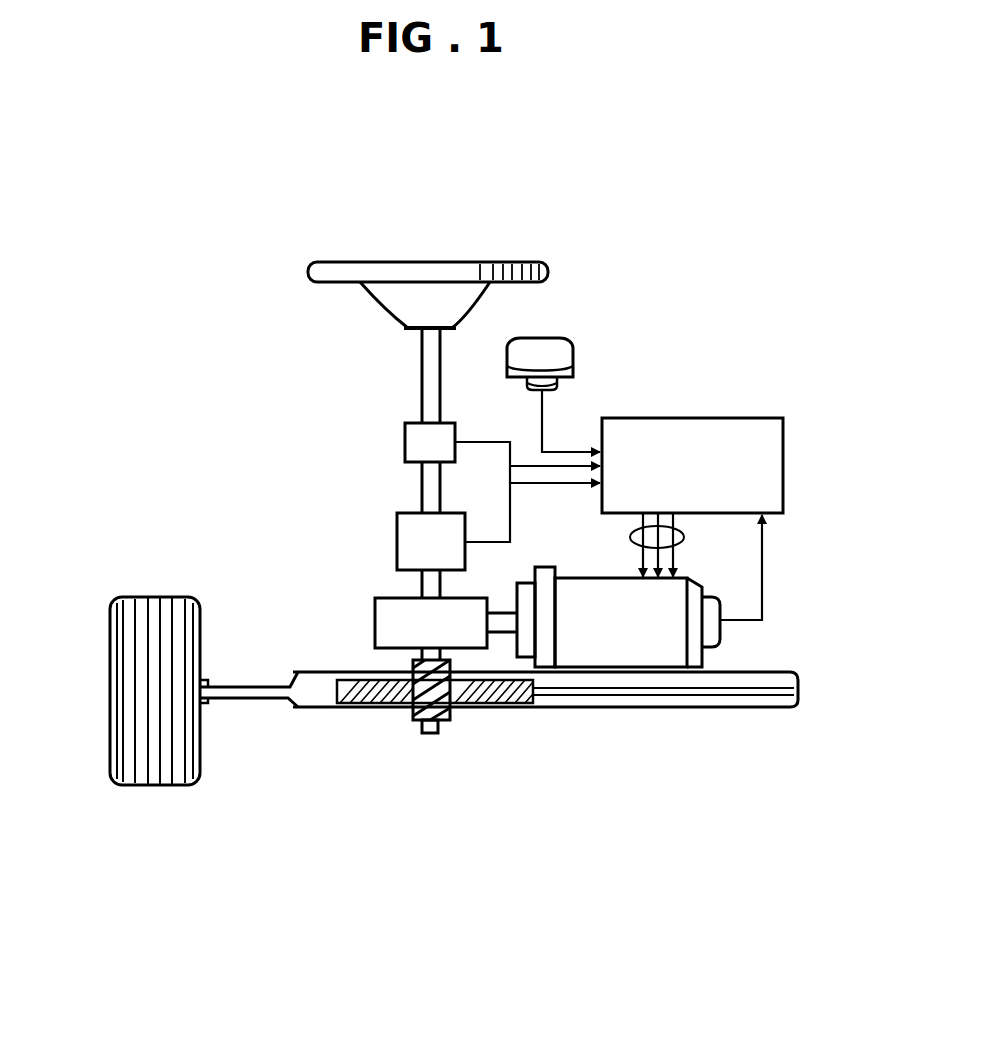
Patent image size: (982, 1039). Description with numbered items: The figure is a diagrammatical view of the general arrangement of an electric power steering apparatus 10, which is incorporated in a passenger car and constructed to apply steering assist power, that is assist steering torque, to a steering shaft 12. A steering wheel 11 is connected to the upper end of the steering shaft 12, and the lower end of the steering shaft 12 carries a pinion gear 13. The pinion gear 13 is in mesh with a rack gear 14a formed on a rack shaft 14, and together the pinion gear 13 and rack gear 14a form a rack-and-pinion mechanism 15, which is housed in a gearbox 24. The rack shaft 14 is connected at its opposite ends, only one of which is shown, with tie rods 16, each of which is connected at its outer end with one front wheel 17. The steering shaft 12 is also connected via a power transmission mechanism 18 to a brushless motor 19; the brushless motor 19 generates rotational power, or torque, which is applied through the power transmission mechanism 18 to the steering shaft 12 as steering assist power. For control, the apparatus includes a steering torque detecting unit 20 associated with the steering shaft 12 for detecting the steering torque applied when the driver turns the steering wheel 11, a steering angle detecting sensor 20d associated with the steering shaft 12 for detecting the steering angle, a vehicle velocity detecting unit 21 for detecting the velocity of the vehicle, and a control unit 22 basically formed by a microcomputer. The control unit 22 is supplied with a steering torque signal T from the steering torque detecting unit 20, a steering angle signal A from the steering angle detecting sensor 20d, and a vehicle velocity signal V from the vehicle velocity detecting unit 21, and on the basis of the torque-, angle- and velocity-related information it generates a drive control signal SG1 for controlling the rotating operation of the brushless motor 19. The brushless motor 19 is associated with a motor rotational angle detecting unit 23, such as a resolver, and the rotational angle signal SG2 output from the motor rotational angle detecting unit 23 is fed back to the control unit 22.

The electric power steering apparatus 10 is at (330, 218).
The steering wheel 11 is at (405, 262).
The steering shaft 12 is at (421, 406).
The pinion gear 13 is at (447, 728).
The rack shaft 14 is at (672, 683).
The rack gear 14a is at (357, 703).
The rack-and-pinion mechanism 15 is at (411, 735).
The tie rod 16 is at (242, 698).
The front wheel 17 is at (110, 738).
The power transmission mechanism 18 is at (375, 626).
The brushless motor 19 is at (587, 647).
The steering torque detecting unit 20 is at (397, 545).
The steering angle detecting sensor 20d is at (443, 423).
The vehicle velocity detecting unit 21 is at (565, 340).
The control unit 22 is at (700, 418).
The motor rotational angle detecting unit 23 is at (720, 640).
The gearbox 24 is at (482, 719).
The steering angle signal A is at (481, 441).
The steering torque signal T is at (468, 528).
The vehicle velocity signal V is at (547, 432).
The drive control signal SG1 is at (630, 537).
The rotational angle signal SG2 is at (762, 582).